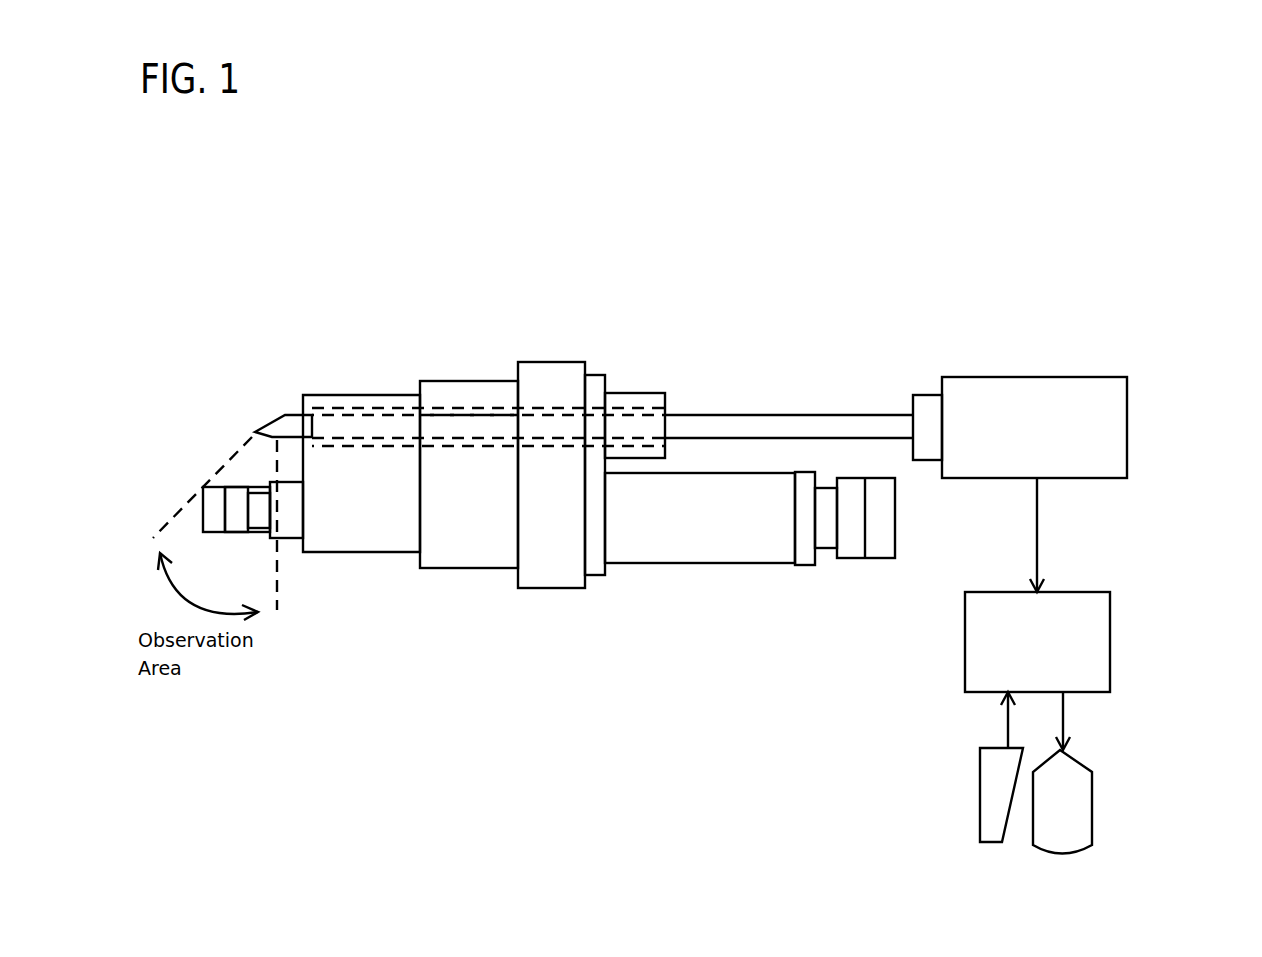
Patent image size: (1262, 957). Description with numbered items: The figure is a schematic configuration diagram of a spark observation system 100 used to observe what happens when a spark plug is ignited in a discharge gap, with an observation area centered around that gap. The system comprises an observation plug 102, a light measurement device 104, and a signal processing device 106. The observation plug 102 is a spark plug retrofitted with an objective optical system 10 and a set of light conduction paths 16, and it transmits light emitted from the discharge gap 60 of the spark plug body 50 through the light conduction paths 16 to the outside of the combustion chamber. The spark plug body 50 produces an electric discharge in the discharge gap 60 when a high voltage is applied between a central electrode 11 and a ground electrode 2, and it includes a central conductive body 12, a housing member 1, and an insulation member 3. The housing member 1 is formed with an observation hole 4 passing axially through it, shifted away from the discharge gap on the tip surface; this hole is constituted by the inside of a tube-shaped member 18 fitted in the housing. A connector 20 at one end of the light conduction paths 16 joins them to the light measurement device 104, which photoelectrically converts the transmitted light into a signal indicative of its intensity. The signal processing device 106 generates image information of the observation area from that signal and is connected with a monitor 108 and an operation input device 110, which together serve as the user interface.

The spark observation system 100 is at (1122, 248).
The housing member 1 is at (460, 546).
The ground electrode 2 is at (213, 500).
The insulation member 3 is at (285, 540).
The observation hole 4 is at (402, 388).
The objective optical system 10 is at (287, 415).
The central electrode 11 is at (260, 503).
The central conductive body 12 is at (850, 542).
The set of light conduction paths 16 is at (653, 435).
The tube-shaped member 18 is at (494, 410).
The connector 20 is at (928, 445).
The spark plug body 50 is at (457, 378).
The discharge gap 60 is at (237, 498).
The observation plug 102 is at (555, 547).
The light measurement device 104 is at (1018, 377).
The signal processing device 106 is at (1110, 643).
The monitor 108 is at (1092, 807).
The operation input device 110 is at (980, 797).